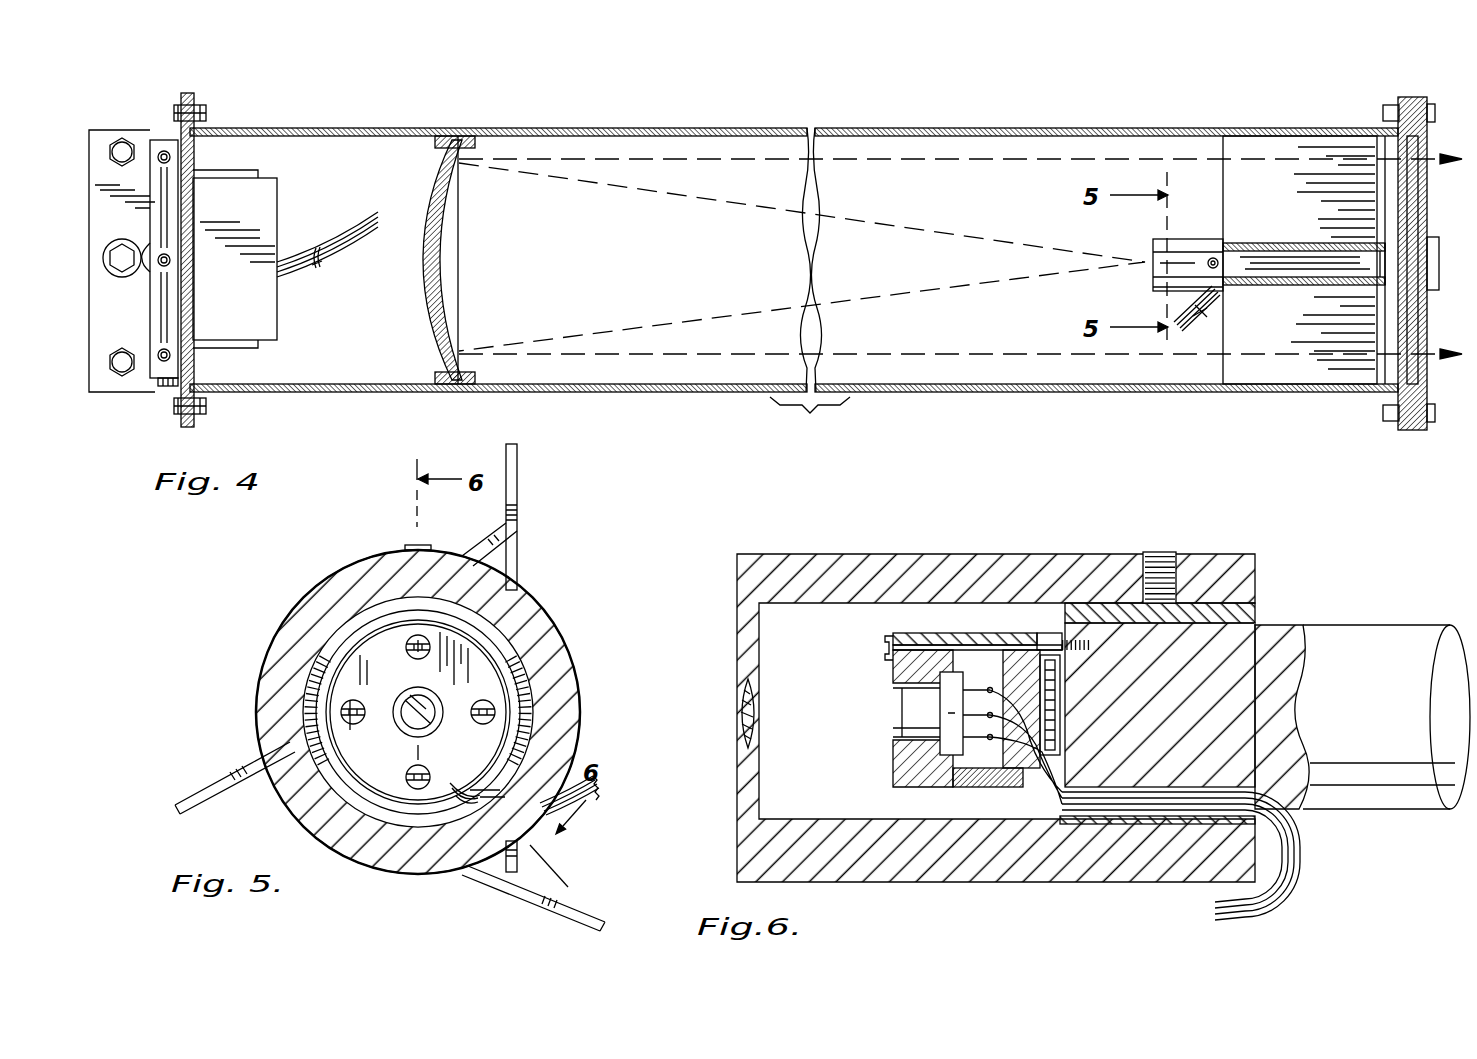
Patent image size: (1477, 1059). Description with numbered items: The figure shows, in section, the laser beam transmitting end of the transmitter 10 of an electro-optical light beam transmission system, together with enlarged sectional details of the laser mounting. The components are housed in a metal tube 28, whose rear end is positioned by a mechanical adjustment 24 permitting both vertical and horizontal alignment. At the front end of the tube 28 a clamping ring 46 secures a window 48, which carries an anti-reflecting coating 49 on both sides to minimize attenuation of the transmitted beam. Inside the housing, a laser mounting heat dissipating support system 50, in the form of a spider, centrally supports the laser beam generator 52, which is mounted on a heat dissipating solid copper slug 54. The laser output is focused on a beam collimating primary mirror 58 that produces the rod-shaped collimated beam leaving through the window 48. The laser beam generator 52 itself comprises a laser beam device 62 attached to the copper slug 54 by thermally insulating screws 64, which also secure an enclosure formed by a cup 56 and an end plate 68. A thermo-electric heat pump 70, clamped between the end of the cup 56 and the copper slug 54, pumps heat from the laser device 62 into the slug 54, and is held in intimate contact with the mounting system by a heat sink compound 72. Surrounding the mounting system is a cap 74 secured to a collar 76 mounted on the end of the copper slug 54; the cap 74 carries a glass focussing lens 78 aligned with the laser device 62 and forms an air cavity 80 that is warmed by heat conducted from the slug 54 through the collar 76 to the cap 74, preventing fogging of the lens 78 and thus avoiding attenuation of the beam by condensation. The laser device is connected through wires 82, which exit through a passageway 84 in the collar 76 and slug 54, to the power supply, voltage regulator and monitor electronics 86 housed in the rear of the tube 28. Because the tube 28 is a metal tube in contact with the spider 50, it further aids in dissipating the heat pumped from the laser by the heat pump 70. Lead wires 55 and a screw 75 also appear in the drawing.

In FIG. 4, the transmitter 10 is at (662, 129).
In FIG. 4, the mechanical adjustment 24 is at (140, 130).
In FIG. 4, the tube 28 is at (960, 128).
In FIG. 4, the clamping ring 46 is at (1420, 98).
In FIG. 4, the window 48 is at (1420, 326).
In FIG. 4, the anti-reflecting coating 49 is at (1418, 215).
In FIG. 4, the laser mounting heat dissipating support system 50 is at (1272, 150).
In FIG. 5, the laser mounting heat dissipating support system 50 is at (518, 513).
In FIG. 4, the laser beam generator 52 is at (1152, 248).
In FIG. 6, the laser beam generator 52 is at (1051, 710).
In FIG. 4, the solid copper slug 54 is at (1315, 255).
In FIG. 6, the solid copper slug 54 is at (1345, 630).
In FIG. 6, the lead wires 55 is at (988, 685).
In FIG. 6, the cup 56 is at (985, 790).
In FIG. 4, the beam collimating primary mirror 58 is at (445, 290).
In FIG. 5, the laser beam device 62 is at (398, 708).
In FIG. 6, the laser beam device 62 is at (912, 705).
In FIG. 5, the thermally insulating screws 64 is at (408, 640).
In FIG. 6, the thermally insulating screws 64 is at (885, 650).
In FIG. 6, the end plate 68 is at (893, 638).
In FIG. 6, the thermo-electric heat pump 70 is at (1045, 770).
In FIG. 6, the heat sink compound 72 is at (1063, 640).
In FIG. 5, the cap 74 is at (545, 606).
In FIG. 6, the cap 74 is at (810, 558).
In FIG. 6, the set screw 75 is at (1155, 552).
In FIG. 5, the collar 76 is at (510, 770).
In FIG. 6, the collar 76 is at (1258, 604).
In FIG. 6, the glass focussing lens 78 is at (745, 713).
In FIG. 6, the cavity 80 is at (820, 737).
In FIG. 4, the wires 82 is at (376, 218).
In FIG. 5, the wires 82 is at (600, 800).
In FIG. 6, the wires 82 is at (1302, 862).
In FIG. 6, the passageway 84 is at (1175, 822).
In FIG. 4, the power supply, voltage regulator and monitor electronics 86 is at (278, 314).